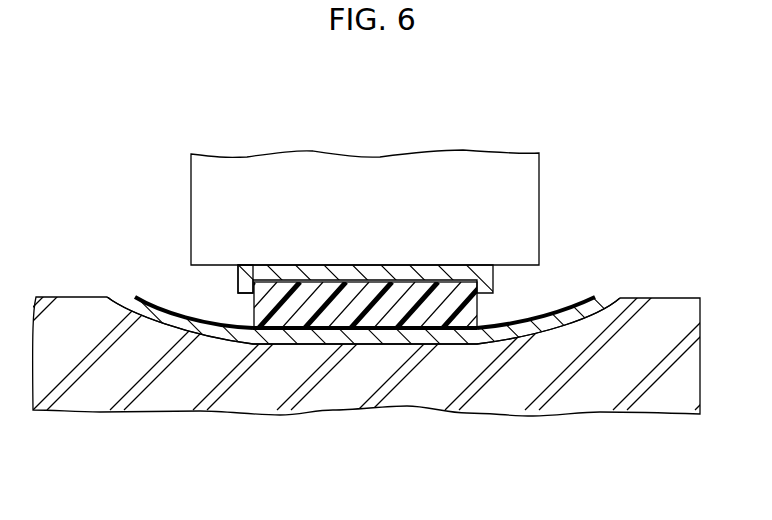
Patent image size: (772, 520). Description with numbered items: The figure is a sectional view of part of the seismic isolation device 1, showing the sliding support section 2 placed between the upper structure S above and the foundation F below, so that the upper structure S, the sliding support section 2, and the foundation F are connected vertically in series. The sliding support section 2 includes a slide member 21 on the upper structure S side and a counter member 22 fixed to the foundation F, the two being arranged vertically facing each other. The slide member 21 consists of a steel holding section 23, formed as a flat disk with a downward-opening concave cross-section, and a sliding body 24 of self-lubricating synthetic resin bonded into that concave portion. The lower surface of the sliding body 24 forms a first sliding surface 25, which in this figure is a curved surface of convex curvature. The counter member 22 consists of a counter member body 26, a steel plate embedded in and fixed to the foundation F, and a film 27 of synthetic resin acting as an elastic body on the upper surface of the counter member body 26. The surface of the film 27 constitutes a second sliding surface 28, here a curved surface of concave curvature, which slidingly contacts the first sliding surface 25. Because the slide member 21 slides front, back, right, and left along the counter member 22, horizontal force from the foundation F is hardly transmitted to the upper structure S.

The seismic isolation device 1 is at (685, 203).
The sliding support section 2 is at (547, 300).
The slide member 21 is at (229, 283).
The counter member 22 is at (548, 337).
The holding section 23 is at (315, 270).
The sliding body 24 is at (307, 312).
The first sliding surface 25 is at (295, 333).
The counter member body 26 is at (468, 346).
The film 27 is at (230, 328).
The second sliding surface 28 is at (534, 318).
The upper structure S is at (543, 190).
The foundation F is at (627, 340).